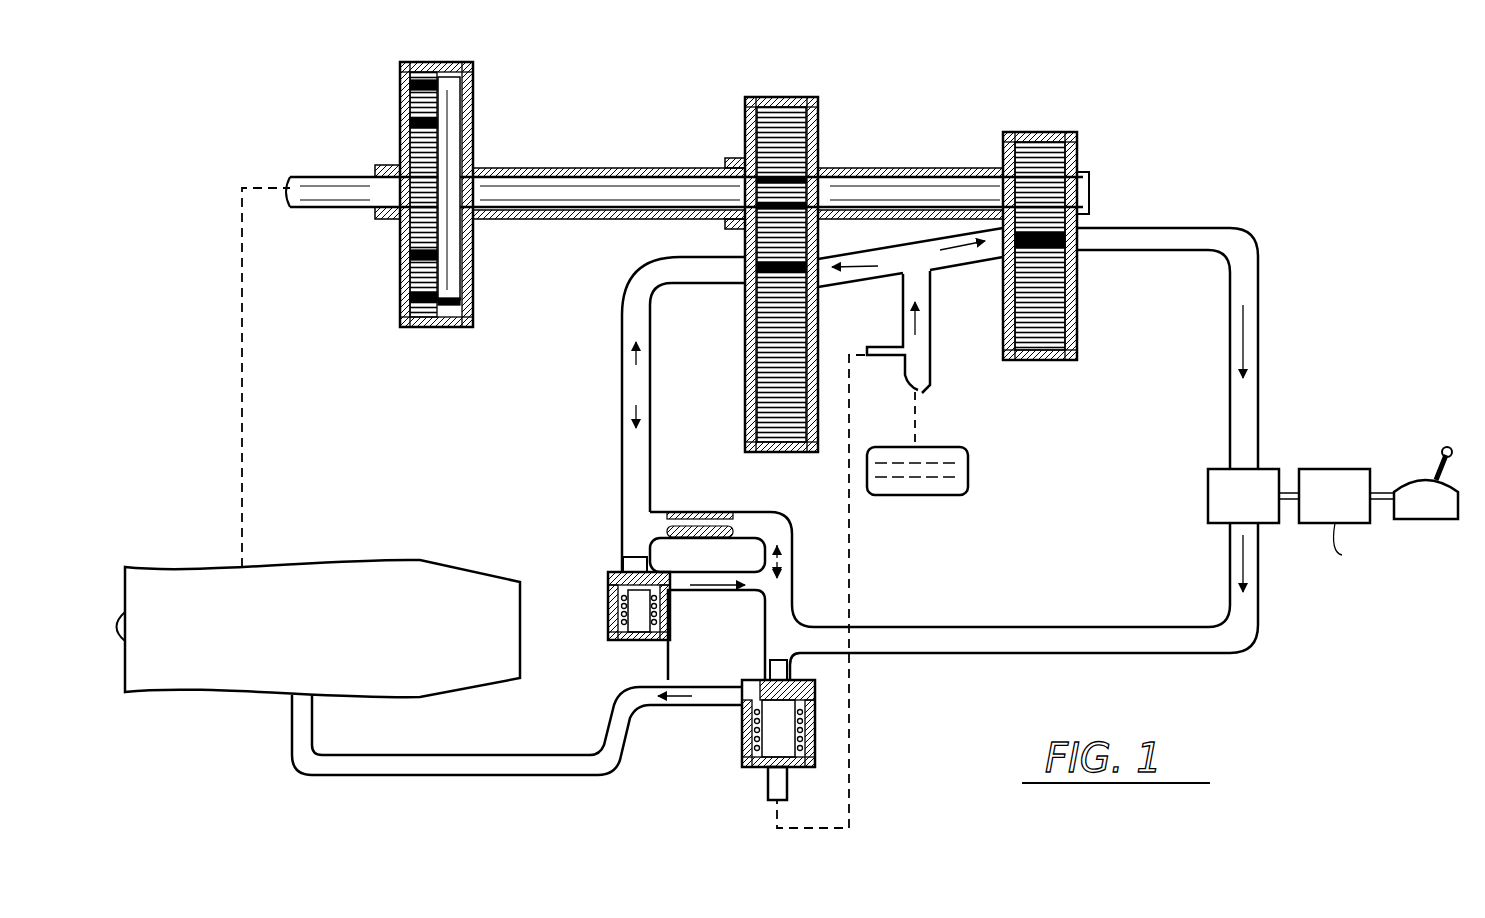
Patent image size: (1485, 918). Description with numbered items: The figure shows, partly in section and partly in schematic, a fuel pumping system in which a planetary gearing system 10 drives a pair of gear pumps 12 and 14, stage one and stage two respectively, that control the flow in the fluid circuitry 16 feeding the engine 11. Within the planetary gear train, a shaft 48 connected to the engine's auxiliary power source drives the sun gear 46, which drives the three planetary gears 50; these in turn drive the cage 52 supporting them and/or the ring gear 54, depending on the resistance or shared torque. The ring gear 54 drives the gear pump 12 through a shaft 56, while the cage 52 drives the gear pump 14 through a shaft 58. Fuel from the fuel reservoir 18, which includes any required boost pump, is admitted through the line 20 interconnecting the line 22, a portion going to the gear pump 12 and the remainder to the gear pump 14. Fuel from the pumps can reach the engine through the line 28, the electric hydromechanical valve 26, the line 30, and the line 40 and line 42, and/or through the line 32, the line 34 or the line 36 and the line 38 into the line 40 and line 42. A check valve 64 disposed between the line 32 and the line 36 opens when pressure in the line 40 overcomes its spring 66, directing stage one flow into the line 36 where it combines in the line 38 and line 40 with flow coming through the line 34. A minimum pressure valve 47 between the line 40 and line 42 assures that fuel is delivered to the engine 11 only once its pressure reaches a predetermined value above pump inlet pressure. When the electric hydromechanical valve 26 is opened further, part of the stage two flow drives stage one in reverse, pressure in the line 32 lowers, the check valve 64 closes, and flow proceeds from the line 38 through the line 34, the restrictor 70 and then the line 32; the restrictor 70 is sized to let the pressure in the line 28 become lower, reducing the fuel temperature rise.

The planetary gearing system 10 is at (441, 182).
The engine 11 is at (402, 567).
The gear pump 12 is at (826, 126).
The gear pump 14 is at (1085, 145).
The fluid circuitry 16 is at (610, 347).
The fuel reservoir 18 is at (968, 470).
The line 20 is at (932, 345).
The line 22 is at (880, 276).
The electric hydromechanical valve 26 is at (1282, 468).
The line 28 is at (1258, 318).
The line 30 is at (1258, 592).
The line 32 is at (657, 352).
The line 34 is at (788, 512).
The line 36 is at (737, 594).
The line 38 is at (800, 617).
The line 40 is at (795, 672).
The line 42 is at (464, 776).
The sun gear 46 is at (400, 153).
The minimum pressure valve 47 is at (815, 740).
The shaft 48 is at (345, 200).
The planetary gears 50 is at (398, 118).
The cage 52 is at (452, 150).
The ring gear 54 is at (442, 63).
The shaft 56 is at (660, 165).
The shaft 58 is at (605, 195).
The check valve 64 is at (649, 617).
The spring 66 is at (648, 642).
The restrictor 70 is at (706, 512).